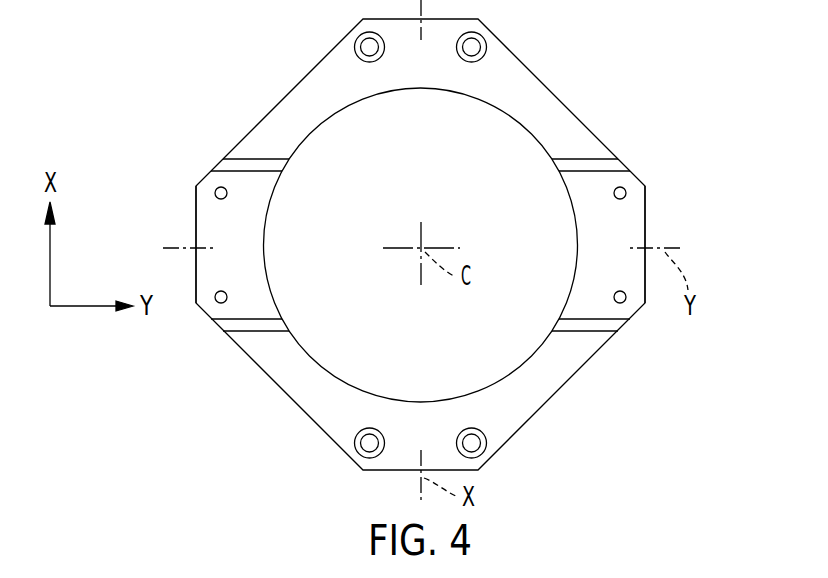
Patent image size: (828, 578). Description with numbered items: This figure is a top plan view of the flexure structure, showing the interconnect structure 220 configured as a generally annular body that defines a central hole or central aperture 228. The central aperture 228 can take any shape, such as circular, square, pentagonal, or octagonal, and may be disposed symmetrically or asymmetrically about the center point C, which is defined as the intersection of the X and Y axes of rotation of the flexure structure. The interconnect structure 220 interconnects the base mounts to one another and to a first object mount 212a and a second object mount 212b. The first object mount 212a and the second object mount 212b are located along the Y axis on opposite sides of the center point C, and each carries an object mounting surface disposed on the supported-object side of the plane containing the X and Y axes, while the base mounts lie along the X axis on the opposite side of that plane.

The interconnect structure 220 is at (546, 99).
The central aperture 228 is at (325, 144).
The first object mount 212a is at (205, 211).
The second object mount 212b is at (632, 219).